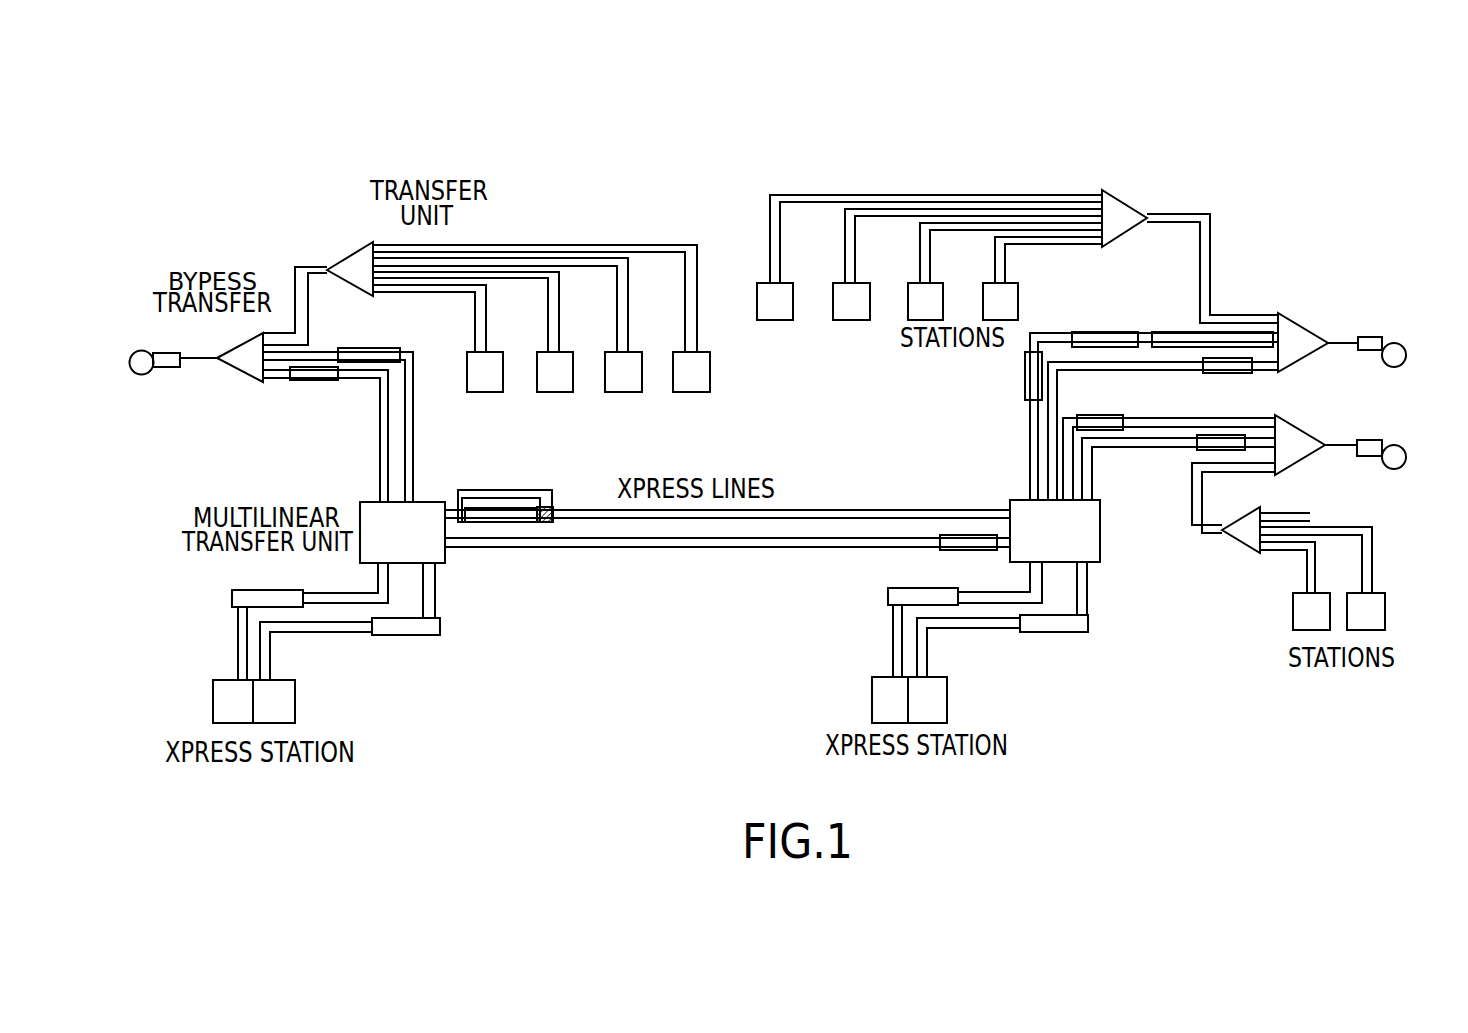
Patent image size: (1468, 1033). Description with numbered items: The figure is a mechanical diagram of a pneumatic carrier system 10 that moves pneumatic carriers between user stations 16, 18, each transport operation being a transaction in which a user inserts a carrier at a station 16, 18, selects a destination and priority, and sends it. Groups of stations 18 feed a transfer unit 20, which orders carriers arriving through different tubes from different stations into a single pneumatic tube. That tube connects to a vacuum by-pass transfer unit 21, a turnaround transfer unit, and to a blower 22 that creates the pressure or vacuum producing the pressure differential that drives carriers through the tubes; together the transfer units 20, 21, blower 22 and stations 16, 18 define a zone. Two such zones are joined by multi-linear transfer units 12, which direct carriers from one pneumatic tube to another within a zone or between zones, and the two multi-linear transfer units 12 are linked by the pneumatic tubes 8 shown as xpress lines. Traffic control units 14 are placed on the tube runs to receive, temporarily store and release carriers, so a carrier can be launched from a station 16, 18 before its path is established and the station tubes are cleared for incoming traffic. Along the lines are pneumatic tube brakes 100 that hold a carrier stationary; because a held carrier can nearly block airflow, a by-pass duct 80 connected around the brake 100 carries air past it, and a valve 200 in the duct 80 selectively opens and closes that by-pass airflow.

The pneumatic tubes 8 is at (840, 510).
The pneumatic carrier system 10 is at (645, 628).
The multi-linear transfer unit 12 is at (445, 563).
The traffic control unit 14 is at (318, 380).
The user station 16 is at (295, 693).
The user stations 18 is at (713, 400).
The transfer unit 20 is at (350, 258).
The vacuum by-pass transfer unit 21 is at (250, 377).
The blower 22 is at (145, 375).
The by-pass duct 80 is at (522, 490).
The pneumatic tube brake 100 is at (370, 348).
The valve 200 is at (553, 507).